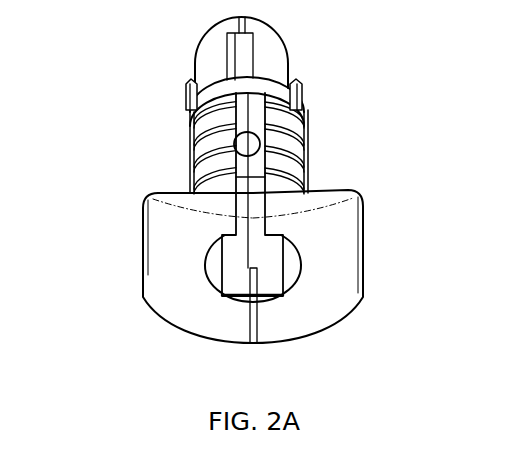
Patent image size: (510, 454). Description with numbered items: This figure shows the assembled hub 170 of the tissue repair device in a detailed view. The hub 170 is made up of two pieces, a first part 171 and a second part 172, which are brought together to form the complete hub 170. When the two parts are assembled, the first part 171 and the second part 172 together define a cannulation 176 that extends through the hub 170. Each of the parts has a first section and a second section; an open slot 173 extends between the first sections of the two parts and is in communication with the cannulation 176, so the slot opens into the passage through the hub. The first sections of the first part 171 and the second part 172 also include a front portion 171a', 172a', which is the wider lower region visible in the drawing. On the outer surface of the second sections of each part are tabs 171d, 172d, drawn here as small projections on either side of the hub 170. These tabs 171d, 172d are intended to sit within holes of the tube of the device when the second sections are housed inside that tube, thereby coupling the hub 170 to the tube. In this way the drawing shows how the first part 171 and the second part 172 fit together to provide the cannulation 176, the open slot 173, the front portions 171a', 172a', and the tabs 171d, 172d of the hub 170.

The hub 170 is at (268, 90).
The first part 171 is at (288, 148).
The second part 172 is at (213, 137).
The tab 171d is at (301, 93).
The tab 172d is at (188, 103).
The open slot 173 is at (255, 121).
The cannulation 176 is at (291, 266).
The front portion 171a' is at (325, 281).
The front portion 172a' is at (163, 268).